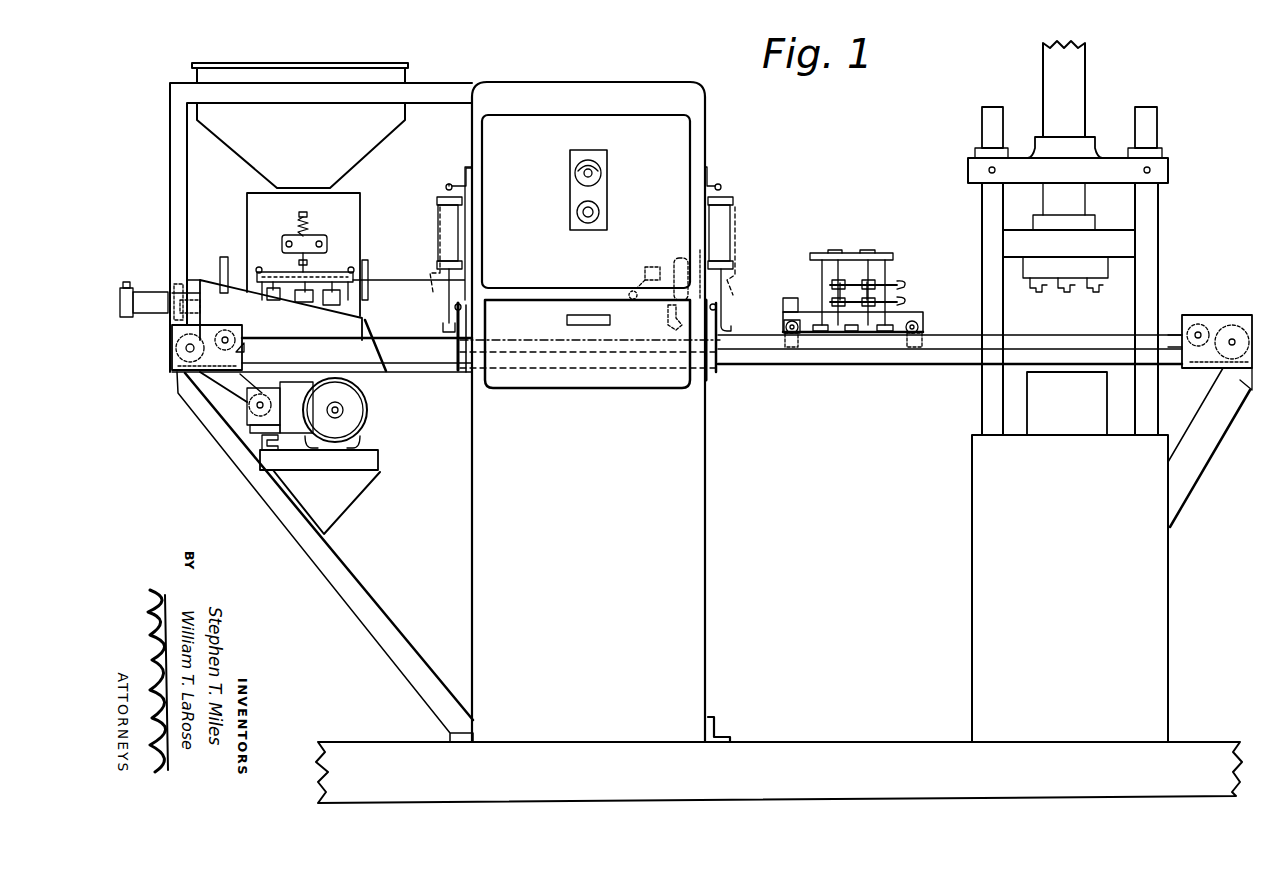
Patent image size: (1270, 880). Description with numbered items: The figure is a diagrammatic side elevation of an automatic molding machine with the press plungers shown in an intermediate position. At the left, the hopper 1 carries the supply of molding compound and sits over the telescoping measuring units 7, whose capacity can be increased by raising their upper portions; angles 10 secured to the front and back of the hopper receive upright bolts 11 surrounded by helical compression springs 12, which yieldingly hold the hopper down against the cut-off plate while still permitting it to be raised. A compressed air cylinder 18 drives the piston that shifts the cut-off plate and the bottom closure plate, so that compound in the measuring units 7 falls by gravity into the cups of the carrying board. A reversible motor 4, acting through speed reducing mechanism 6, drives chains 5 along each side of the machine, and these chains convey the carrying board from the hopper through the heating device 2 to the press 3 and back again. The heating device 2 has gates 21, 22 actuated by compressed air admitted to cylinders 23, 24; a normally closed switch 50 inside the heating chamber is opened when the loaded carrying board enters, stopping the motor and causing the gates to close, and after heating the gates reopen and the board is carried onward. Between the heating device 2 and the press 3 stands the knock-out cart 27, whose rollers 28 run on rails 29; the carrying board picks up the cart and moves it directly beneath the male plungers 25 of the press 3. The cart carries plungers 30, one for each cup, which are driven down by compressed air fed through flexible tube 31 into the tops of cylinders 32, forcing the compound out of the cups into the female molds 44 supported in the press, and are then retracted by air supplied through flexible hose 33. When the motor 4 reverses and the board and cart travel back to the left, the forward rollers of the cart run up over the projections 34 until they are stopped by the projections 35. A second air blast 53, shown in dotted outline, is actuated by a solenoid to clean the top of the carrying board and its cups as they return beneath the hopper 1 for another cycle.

The hopper 1 is at (379, 210).
The heating device 2 is at (722, 140).
The press 3 is at (1175, 223).
The reversible motor 4 is at (357, 412).
The chains 5 is at (244, 346).
The speed reducing mechanism 6 is at (248, 420).
The telescoping measuring units 7 is at (332, 298).
The angles 10 is at (327, 247).
The upright bolts 11 is at (302, 264).
The helical compression springs 12 is at (308, 232).
The compressed air cylinder 18 is at (148, 296).
The gate 21 is at (447, 308).
The gate 22 is at (722, 305).
The cylinder 23 is at (447, 243).
The cylinder 24 is at (722, 227).
The male plungers 25 is at (1092, 285).
The knock-out cart 27 is at (885, 248).
The rollers 28 is at (795, 335).
The rails 29 is at (971, 325).
The plungers 30 is at (824, 290).
The flexible tube 31 is at (906, 284).
The cylinders 32 is at (867, 282).
The flexible hose 33 is at (906, 299).
The projections 34 is at (798, 334).
The projections 35 is at (783, 328).
The female molds 44 is at (1100, 400).
The normally closed switch 50 is at (652, 266).
The second air blast 53 is at (669, 320).